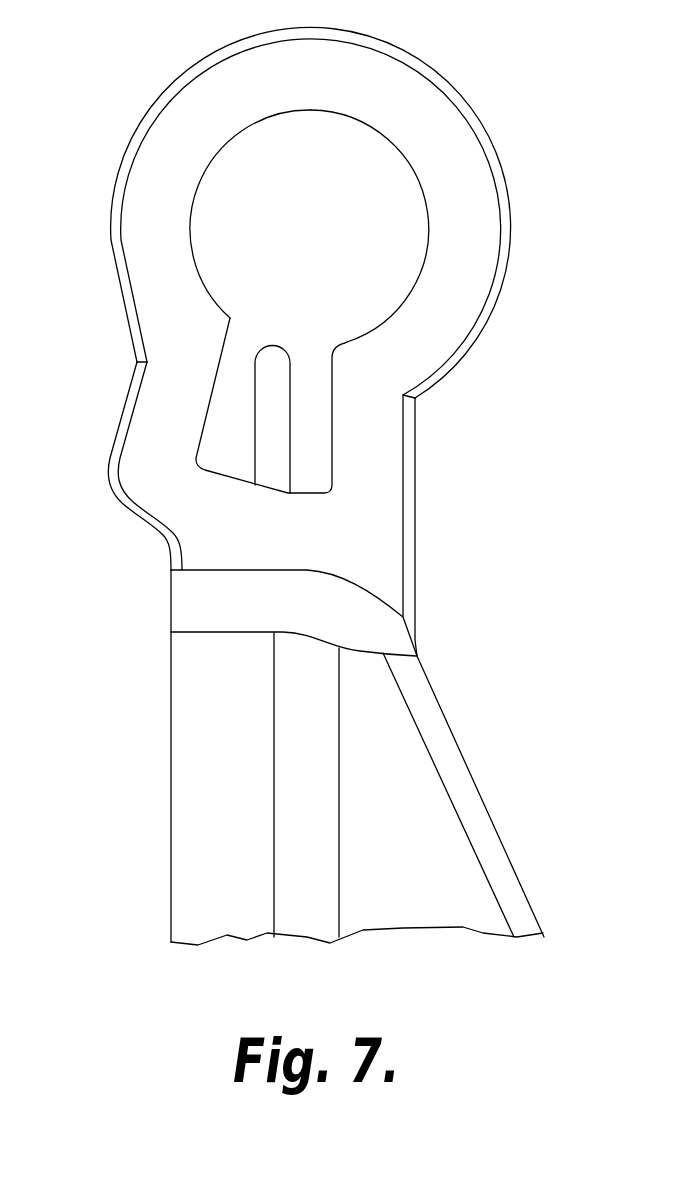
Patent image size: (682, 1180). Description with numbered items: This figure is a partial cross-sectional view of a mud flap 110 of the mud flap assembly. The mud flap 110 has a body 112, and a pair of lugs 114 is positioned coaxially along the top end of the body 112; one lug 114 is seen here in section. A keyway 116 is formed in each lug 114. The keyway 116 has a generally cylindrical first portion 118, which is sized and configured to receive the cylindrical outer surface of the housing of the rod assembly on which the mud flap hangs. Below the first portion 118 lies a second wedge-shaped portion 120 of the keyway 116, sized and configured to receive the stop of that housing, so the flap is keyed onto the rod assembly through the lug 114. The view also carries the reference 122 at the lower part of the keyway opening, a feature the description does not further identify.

The mud flap 110 is at (460, 735).
The body 112 is at (512, 890).
The lug 114 is at (422, 70).
The keyway 116 is at (215, 166).
The first portion 118 is at (349, 117).
The second wedge-shaped portion 120 is at (209, 399).
The tongue 122 is at (290, 422).